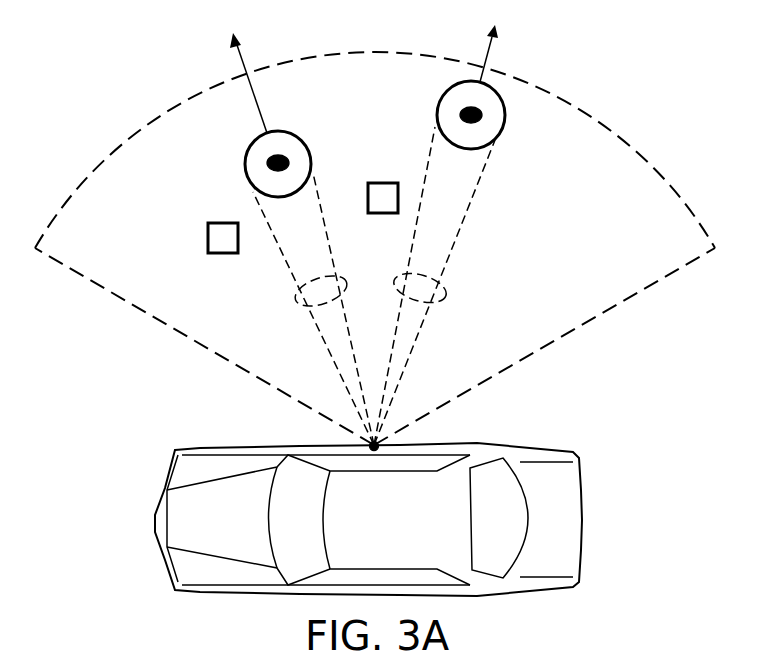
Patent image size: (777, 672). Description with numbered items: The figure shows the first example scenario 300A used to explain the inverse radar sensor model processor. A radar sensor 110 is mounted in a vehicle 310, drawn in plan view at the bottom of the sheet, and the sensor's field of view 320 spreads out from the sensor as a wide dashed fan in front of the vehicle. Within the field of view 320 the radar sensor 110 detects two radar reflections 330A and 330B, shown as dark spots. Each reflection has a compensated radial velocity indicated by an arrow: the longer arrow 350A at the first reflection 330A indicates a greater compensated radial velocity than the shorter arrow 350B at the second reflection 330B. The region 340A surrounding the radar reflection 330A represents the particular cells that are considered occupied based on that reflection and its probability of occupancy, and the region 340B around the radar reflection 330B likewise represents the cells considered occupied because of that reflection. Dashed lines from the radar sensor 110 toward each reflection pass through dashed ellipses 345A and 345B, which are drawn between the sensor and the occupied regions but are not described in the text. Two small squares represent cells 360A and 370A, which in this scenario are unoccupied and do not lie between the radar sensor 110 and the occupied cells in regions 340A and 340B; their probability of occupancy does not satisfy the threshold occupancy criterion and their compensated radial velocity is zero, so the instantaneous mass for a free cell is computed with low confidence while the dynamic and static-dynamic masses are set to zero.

The scenario 300A is at (91, 72).
The radar sensor 110 is at (368, 444).
The vehicle 310 is at (418, 535).
The field of view 320 is at (545, 347).
The radar reflection 330A is at (267, 162).
The radar reflection 330B is at (458, 113).
The region 340A is at (285, 133).
The region 340B is at (503, 123).
The beam cross-section 345A is at (300, 298).
The beam cross-section 345B is at (445, 295).
The arrow 350A is at (240, 62).
The arrow 350B is at (491, 56).
The cell 360A is at (207, 238).
The cell 370A is at (385, 182).